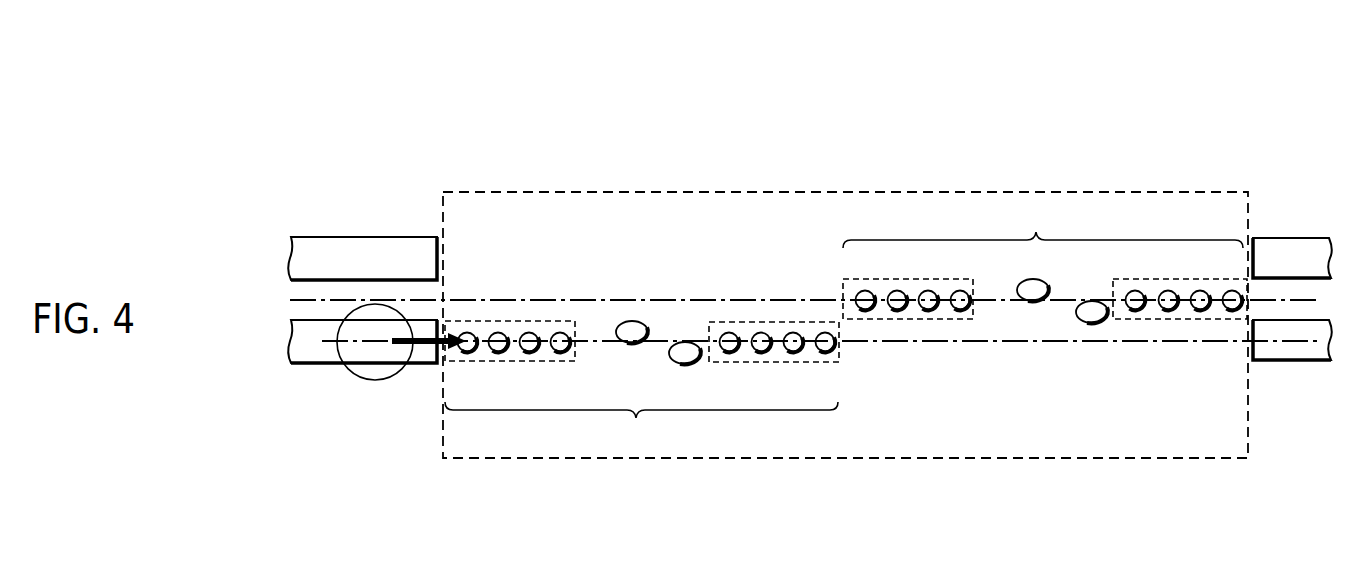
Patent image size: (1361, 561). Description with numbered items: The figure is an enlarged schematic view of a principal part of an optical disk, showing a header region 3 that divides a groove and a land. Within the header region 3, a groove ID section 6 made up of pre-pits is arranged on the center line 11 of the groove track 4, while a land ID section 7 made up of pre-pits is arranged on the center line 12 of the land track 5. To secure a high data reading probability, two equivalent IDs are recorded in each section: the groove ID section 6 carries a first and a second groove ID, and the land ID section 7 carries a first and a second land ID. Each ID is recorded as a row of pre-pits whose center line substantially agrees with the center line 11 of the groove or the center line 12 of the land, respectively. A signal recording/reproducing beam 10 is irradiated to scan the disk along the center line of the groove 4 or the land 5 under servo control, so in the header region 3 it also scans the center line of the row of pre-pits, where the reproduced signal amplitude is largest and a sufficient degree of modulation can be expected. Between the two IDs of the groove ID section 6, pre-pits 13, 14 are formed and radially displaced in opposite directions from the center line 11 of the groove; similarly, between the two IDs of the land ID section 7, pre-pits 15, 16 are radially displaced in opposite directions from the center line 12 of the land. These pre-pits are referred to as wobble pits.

The header region 3 is at (762, 192).
The groove track 4 is at (762, 300).
The land track 5 is at (760, 277).
The groove ID section 6 is at (642, 353).
The land ID section 7 is at (1045, 295).
The signal recording/reproducing beam 10 is at (375, 380).
The center line of the groove track 11 is at (897, 345).
The center line of the land track 12 is at (755, 296).
The pre-pit 13 is at (632, 316).
The pre-pit 14 is at (685, 340).
The pre-pit 15 is at (1033, 302).
The pre-pit 16 is at (1092, 324).